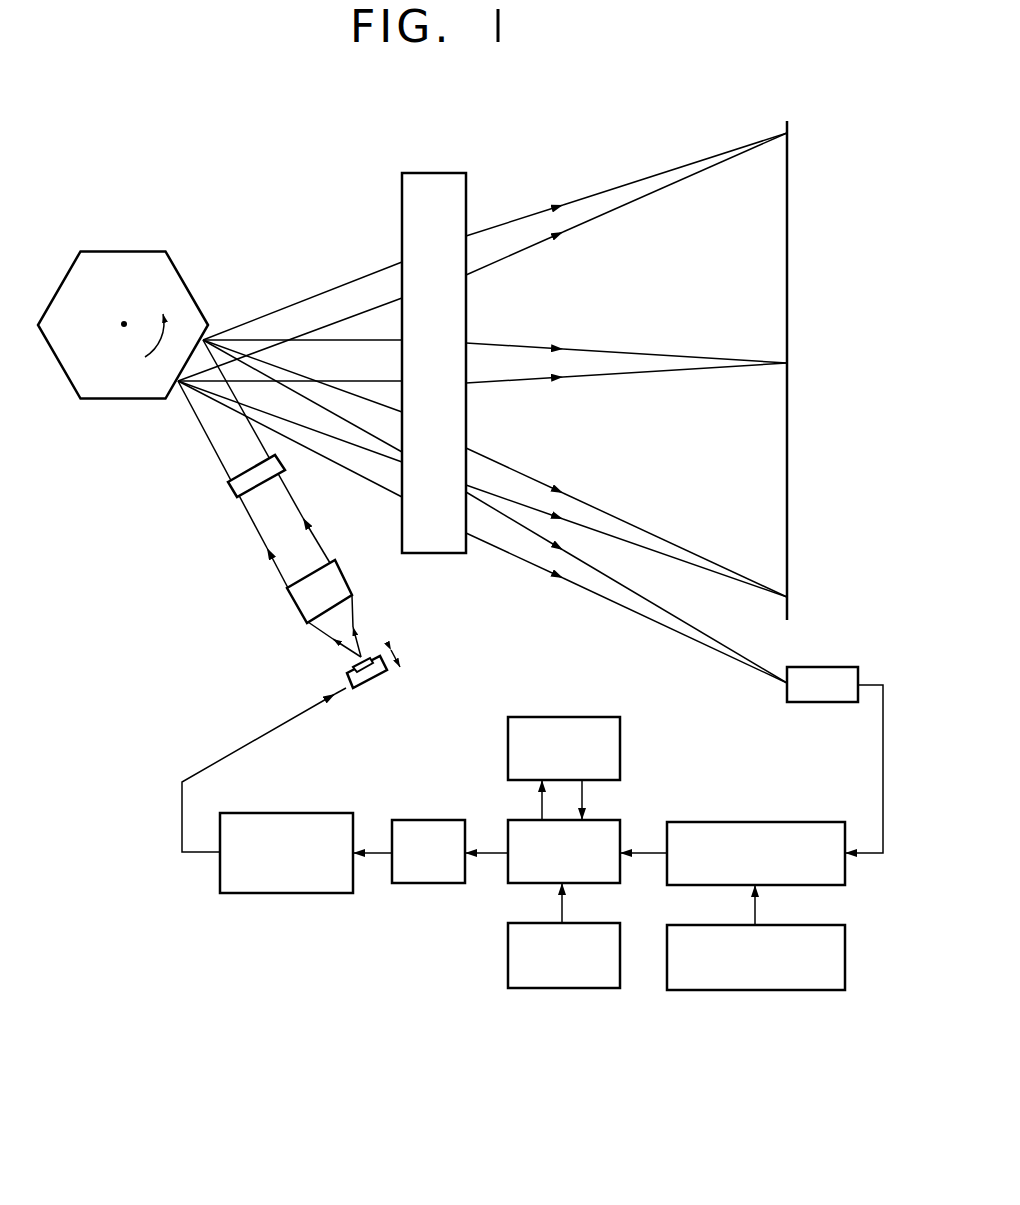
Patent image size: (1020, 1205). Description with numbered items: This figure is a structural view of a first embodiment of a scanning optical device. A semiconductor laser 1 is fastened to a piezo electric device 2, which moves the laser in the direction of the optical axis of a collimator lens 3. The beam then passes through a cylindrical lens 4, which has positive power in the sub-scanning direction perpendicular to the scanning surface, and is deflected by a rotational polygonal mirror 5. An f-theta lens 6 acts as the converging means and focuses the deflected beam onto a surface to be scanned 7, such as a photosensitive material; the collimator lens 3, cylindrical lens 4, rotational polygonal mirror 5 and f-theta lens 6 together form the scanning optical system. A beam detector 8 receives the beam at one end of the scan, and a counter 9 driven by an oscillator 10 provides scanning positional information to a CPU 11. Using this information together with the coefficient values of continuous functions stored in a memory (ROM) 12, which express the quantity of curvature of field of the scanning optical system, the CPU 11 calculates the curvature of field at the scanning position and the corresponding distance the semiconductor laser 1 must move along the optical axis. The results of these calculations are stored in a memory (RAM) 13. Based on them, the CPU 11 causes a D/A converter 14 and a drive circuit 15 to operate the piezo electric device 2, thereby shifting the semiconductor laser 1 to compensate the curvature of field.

The semiconductor laser 1 is at (372, 652).
The piezo electric device 2 is at (374, 688).
The collimator lens 3 is at (295, 601).
The cylindrical lens 4 is at (232, 491).
The rotational polygonal mirror 5 is at (172, 280).
The f.74 lens 6 is at (462, 198).
The surface to be scanned 7 is at (790, 158).
The beam detector 8 is at (800, 666).
The counter 9 is at (771, 821).
The oscillator 10 is at (774, 991).
The CPU 11 is at (612, 820).
The memory (ROM) 12 is at (577, 990).
The memory (RAM) 13 is at (622, 730).
The D/A converter 14 is at (425, 819).
The drive circuit 15 is at (283, 812).